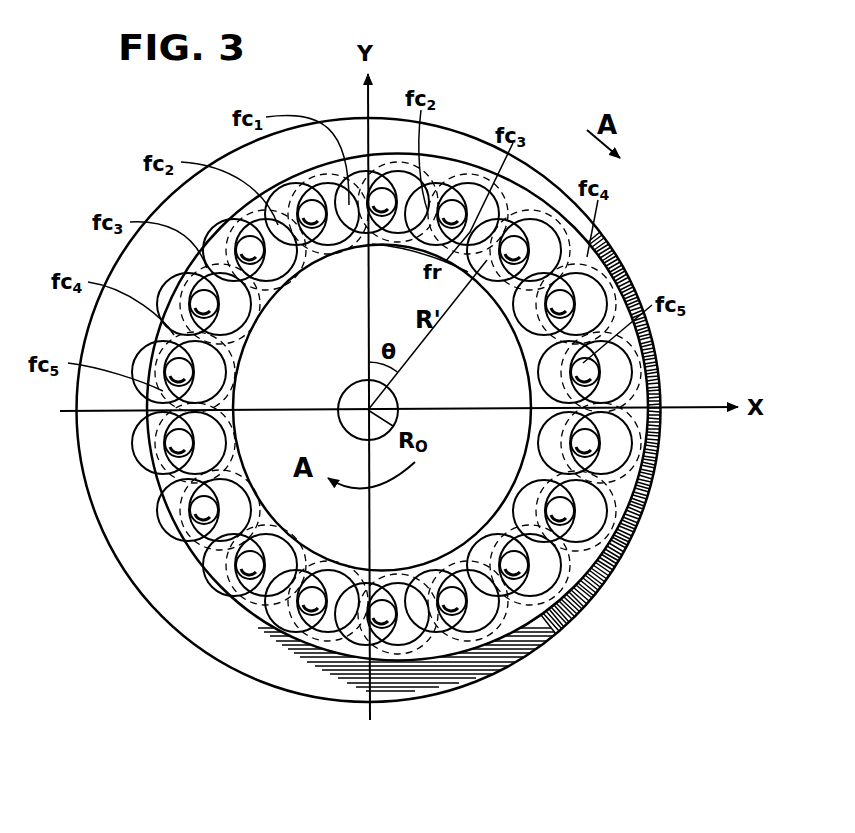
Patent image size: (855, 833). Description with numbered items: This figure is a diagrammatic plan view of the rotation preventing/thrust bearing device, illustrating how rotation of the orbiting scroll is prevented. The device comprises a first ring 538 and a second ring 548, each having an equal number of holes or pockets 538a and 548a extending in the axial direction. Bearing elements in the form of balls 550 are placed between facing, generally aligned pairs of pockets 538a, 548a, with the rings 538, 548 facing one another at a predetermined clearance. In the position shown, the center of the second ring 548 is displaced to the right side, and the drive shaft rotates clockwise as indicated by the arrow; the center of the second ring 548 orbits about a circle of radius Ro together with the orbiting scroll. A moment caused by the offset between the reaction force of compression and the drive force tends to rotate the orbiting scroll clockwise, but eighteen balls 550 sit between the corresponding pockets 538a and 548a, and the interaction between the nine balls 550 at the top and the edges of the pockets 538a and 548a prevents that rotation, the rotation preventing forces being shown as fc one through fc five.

The first ring 538 is at (529, 451).
The pockets of first ring 538a is at (548, 378).
The second ring 548 is at (600, 247).
The pockets of second ring 548a is at (632, 370).
The balls 550 is at (603, 444).